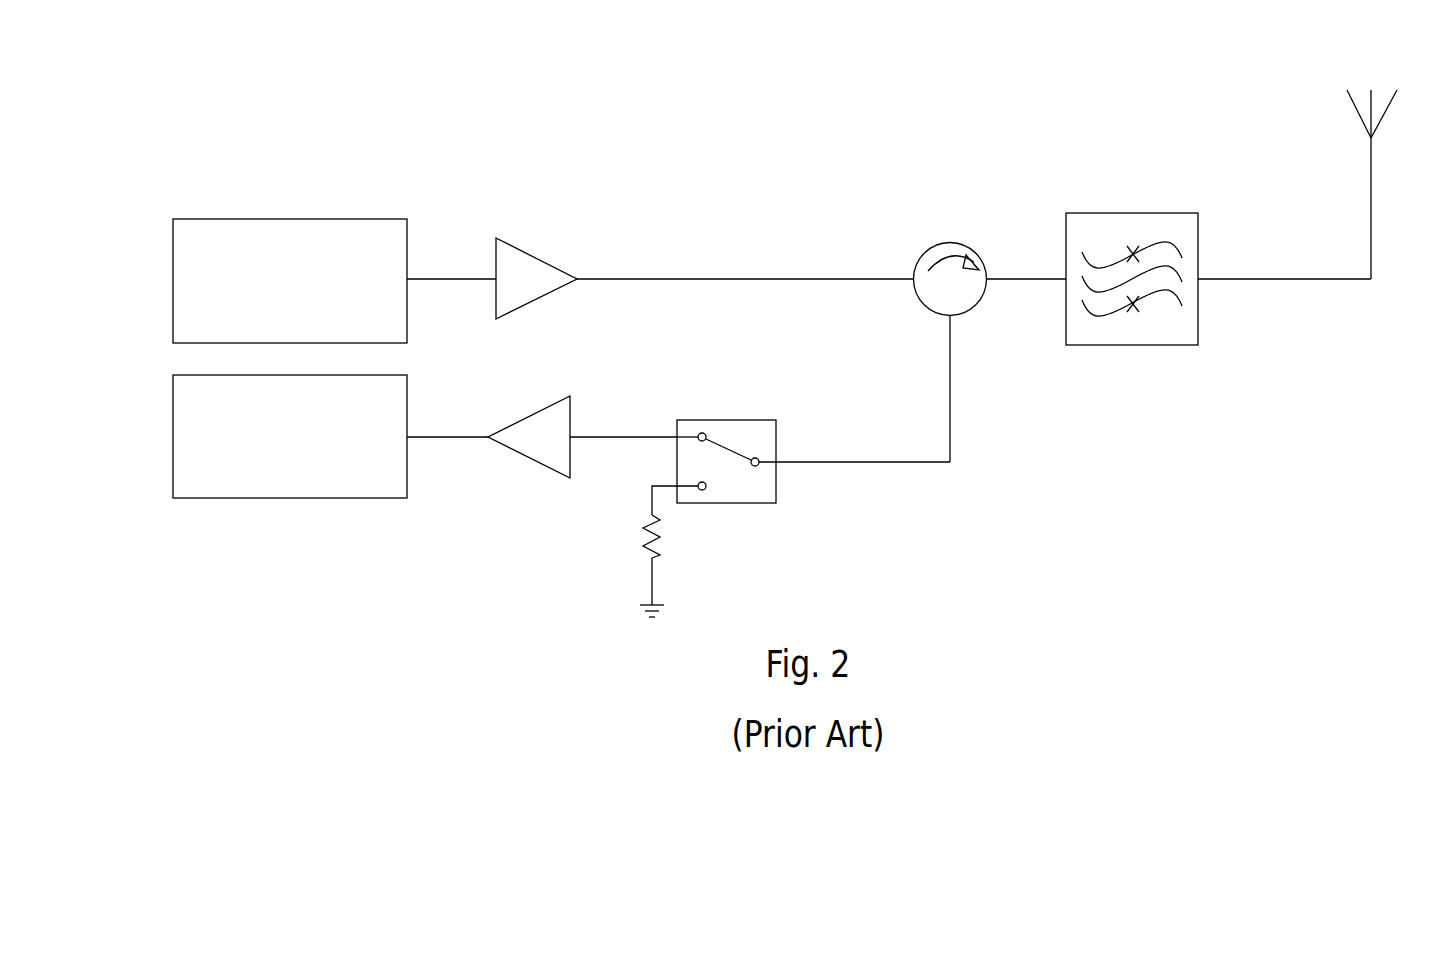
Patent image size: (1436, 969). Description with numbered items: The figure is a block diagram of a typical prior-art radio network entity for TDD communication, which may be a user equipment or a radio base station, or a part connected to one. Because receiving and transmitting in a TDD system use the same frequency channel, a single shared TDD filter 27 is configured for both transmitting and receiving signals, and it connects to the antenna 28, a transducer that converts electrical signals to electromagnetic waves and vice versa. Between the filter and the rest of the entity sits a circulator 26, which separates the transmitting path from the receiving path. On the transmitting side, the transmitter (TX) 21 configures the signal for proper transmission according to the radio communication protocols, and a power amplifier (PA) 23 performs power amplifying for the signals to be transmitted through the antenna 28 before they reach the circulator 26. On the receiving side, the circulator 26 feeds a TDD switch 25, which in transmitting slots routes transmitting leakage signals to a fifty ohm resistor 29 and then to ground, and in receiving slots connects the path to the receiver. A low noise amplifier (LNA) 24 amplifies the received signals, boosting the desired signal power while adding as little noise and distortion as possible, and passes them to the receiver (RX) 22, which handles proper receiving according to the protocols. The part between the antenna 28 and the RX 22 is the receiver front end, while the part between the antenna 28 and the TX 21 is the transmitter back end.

The transmitter (TX) 21 is at (290, 261).
The receiver (RX) 22 is at (290, 468).
The power amplifier (PA) 23 is at (569, 255).
The low noise amplifier (LNA) 24 is at (507, 430).
The TDD switch 25 is at (752, 439).
The circulator 26 is at (970, 281).
The shared TDD filter 27 is at (1177, 238).
The antenna 28 is at (1333, 131).
The 50 ohm resistor 29 is at (701, 551).